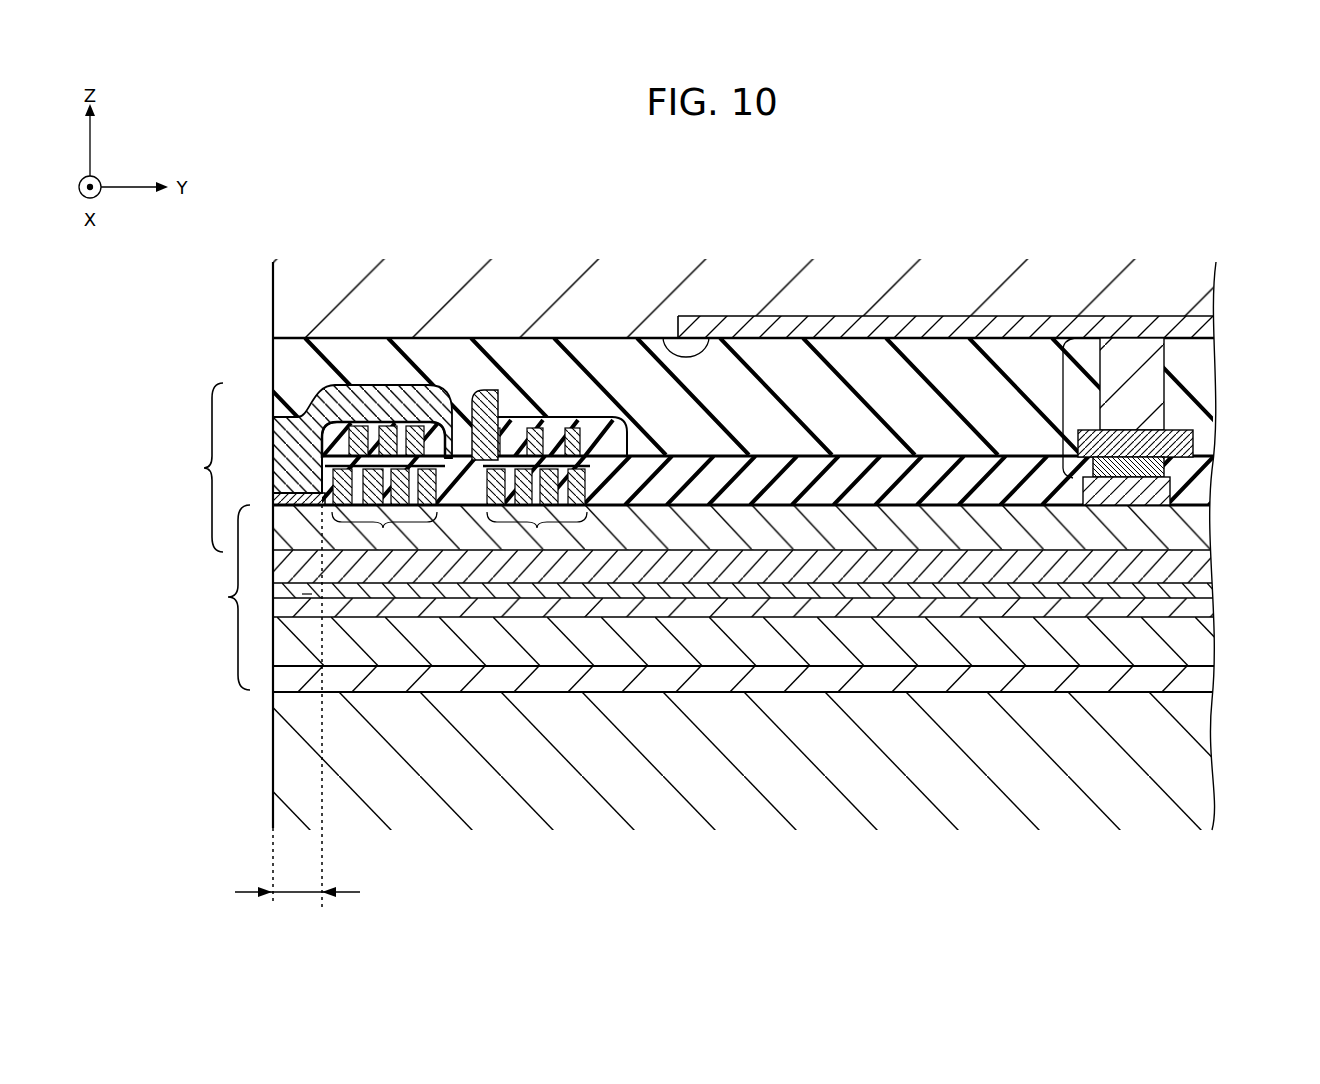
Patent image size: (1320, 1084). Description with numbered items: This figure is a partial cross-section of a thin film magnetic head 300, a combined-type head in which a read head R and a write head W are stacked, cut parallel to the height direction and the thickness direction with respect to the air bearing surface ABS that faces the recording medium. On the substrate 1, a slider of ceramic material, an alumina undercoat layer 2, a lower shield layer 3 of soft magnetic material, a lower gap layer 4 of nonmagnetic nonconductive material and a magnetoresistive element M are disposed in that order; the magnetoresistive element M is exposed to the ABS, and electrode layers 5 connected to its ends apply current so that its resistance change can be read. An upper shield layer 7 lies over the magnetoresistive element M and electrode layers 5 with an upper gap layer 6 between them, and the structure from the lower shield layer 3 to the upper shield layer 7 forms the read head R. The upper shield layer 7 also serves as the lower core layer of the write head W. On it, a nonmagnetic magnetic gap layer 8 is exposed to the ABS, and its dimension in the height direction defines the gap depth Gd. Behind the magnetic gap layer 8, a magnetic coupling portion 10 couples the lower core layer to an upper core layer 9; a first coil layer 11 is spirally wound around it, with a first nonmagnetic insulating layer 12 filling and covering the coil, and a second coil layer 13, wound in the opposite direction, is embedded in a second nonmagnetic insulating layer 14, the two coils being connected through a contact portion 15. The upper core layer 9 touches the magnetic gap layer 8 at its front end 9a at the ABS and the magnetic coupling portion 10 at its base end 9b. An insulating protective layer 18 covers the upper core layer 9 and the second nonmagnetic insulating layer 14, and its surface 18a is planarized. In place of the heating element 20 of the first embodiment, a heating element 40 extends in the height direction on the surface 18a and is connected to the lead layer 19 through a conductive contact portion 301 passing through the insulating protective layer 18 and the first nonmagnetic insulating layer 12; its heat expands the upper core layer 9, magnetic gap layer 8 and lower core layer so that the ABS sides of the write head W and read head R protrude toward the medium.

The thin film magnetic head 300 is at (877, 158).
The substrate 1 is at (1198, 765).
The alumina undercoat layer 2 is at (1202, 675).
The lower shield layer 3 is at (1202, 637).
The lower gap layer 4 is at (1202, 607).
The electrode layers 5 is at (1202, 588).
The upper gap layer 6 is at (1202, 566).
The upper shield layer 7 is at (1207, 527).
The magnetic gap layer 8 is at (285, 500).
The upper core layer 9 is at (345, 392).
The front end 9a is at (285, 431).
The base end 9b is at (458, 425).
The magnetic coupling portion 10 is at (468, 472).
The first coil layer 11 is at (413, 497).
The first nonmagnetic insulating layer 12 is at (1202, 472).
The second coil layer 13 is at (398, 445).
The second nonmagnetic insulating layer 14 is at (385, 425).
The contact portion 15 is at (482, 395).
The insulating protective layer 18 is at (1200, 387).
The surface 18a is at (708, 345).
The lead layer 19 is at (1170, 488).
The heating element 20 is at (1198, 283).
The heating element 40 is at (1205, 323).
The conductive contact portion 301 is at (1060, 410).
The magnetoresistive element M is at (302, 596).
The air bearing surface ABS is at (266, 759).
The write head W is at (200, 467).
The read head R is at (227, 597).
The gap depth Gd is at (297, 719).